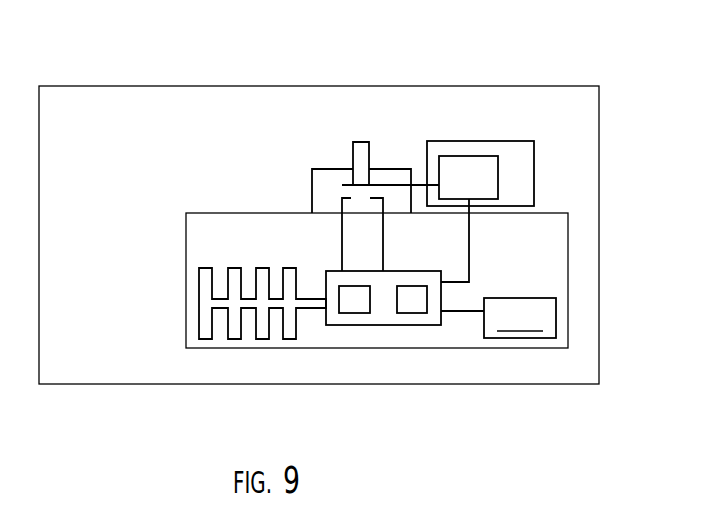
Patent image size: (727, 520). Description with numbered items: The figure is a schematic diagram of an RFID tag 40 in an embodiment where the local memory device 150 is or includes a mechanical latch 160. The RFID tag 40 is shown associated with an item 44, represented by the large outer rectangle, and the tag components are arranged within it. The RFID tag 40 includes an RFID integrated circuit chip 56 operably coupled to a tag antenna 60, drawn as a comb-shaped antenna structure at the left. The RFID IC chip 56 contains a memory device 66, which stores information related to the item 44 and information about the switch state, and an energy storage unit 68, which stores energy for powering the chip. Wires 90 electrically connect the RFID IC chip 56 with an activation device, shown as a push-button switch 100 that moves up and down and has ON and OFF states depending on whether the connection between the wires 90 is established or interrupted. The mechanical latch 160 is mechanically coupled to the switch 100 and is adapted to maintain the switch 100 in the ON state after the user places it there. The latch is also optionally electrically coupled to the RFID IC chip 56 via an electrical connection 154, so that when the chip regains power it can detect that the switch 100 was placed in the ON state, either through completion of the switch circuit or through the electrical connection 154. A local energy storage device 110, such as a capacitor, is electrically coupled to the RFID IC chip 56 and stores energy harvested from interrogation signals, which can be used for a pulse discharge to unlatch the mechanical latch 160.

The switch 100 is at (344, 64).
The item 44 is at (600, 180).
The RFID tag 40 is at (301, 358).
The local memory device 150 is at (518, 167).
The mechanical latch 160 is at (465, 163).
The electrical connection 154 is at (468, 240).
The wires 90 is at (341, 230).
The RFID integrated circuit chip 56 is at (337, 315).
The memory device 66 is at (357, 303).
The energy storage unit 68 is at (413, 307).
The local energy storage device 110 is at (498, 318).
The tag antenna 60 is at (232, 332).